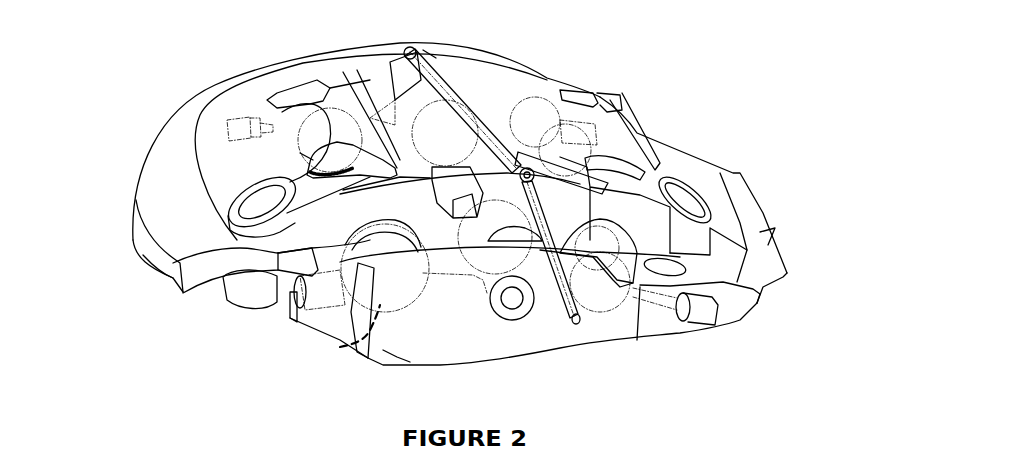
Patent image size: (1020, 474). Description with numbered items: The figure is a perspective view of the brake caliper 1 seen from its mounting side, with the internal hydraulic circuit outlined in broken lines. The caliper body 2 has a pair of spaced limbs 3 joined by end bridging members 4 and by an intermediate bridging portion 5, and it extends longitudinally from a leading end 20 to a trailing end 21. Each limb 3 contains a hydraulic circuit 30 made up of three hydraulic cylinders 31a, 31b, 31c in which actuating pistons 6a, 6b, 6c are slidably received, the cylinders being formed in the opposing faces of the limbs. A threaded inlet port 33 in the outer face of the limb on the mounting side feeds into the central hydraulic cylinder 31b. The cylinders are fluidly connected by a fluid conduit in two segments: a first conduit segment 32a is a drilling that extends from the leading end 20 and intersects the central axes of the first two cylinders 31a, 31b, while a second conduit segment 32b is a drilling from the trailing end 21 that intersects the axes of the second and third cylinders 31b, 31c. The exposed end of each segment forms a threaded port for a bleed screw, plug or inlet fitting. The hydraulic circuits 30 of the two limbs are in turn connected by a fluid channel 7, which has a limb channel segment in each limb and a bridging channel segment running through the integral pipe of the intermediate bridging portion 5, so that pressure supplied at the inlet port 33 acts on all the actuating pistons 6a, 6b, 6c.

The brake caliper 1 is at (121, 80).
The caliper body 2 is at (277, 78).
The limb 3 is at (507, 63).
The end bridging member 4 is at (163, 270).
The intermediate bridging portion 5 is at (488, 88).
The fluid channel 7 is at (423, 50).
The leading end 20 is at (781, 189).
The trailing end 21 is at (117, 229).
The hydraulic circuit 30 is at (798, 353).
The hydraulic cylinder 31a is at (662, 226).
The actuating piston 6a is at (533, 110).
The hydraulic cylinder 31b is at (350, 209).
The actuating piston 6b is at (420, 130).
The hydraulic cylinder 31c is at (217, 242).
The actuating piston 6c is at (291, 161).
The first conduit segment 32a is at (543, 273).
The second conduit segment 32b is at (383, 350).
The threaded inlet port 33 is at (313, 312).